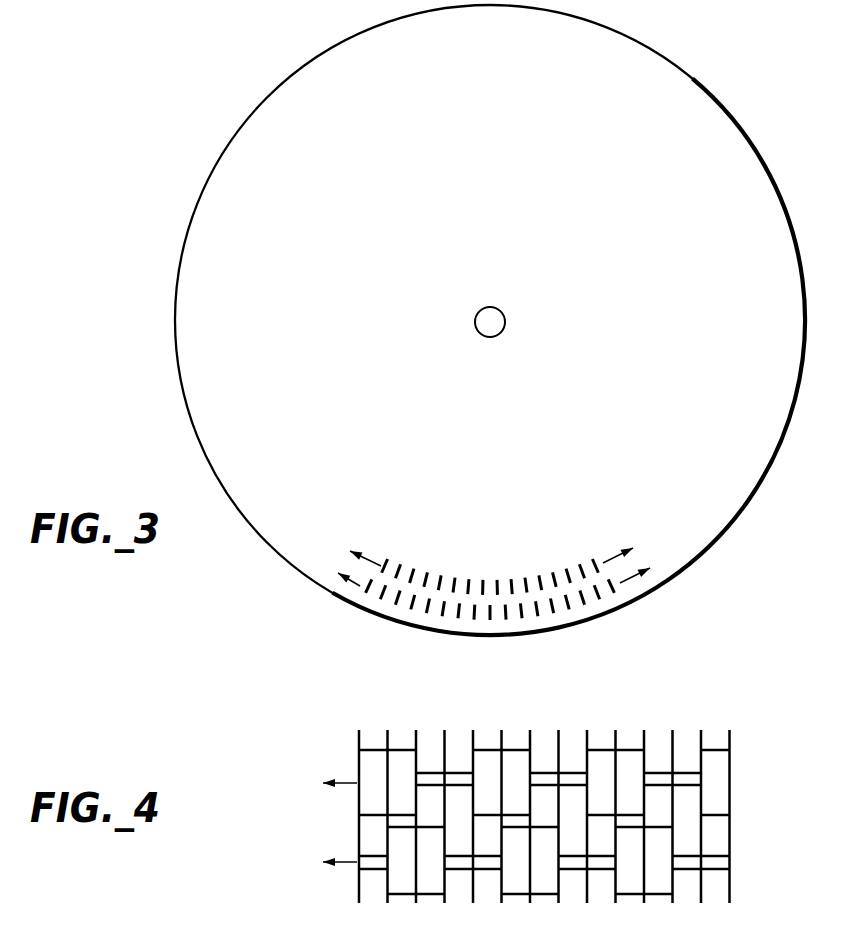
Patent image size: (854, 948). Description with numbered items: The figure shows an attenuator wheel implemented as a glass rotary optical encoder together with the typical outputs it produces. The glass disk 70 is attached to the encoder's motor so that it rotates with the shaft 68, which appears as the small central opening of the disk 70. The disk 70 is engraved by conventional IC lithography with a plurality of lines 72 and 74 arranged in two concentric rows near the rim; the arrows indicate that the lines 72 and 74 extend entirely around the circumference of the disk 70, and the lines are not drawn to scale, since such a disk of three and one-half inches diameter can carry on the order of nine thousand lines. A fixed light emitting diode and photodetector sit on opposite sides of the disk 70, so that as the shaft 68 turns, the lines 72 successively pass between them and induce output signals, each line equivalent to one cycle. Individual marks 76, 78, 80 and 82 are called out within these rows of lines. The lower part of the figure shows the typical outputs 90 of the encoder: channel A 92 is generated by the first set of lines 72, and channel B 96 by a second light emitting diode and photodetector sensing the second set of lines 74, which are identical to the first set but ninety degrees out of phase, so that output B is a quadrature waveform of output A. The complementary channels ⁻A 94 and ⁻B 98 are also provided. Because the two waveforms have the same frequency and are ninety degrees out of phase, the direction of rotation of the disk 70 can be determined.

In FIG. 3, the shaft 68 is at (505, 322).
In FIG. 3, the glass optical encoder disk 70 is at (259, 568).
In FIG. 3, the first set of lines 72 is at (374, 558).
In FIG. 3, the second set of lines 74 is at (357, 588).
In FIG. 3, the outer row of marks 76 is at (369, 604).
In FIG. 3, the mark 78 is at (399, 598).
In FIG. 3, the inner row of marks 80 is at (500, 590).
In FIG. 3, the mark 82 is at (545, 586).
In FIG. 4, the typical outputs 90 is at (249, 848).
In FIG. 4, the channel A 92 is at (335, 763).
In FIG. 4, the complementary channel ⁻A 94 is at (335, 803).
In FIG. 4, the channel B 96 is at (335, 841).
In FIG. 4, the complementary channel ⁻B 98 is at (335, 880).